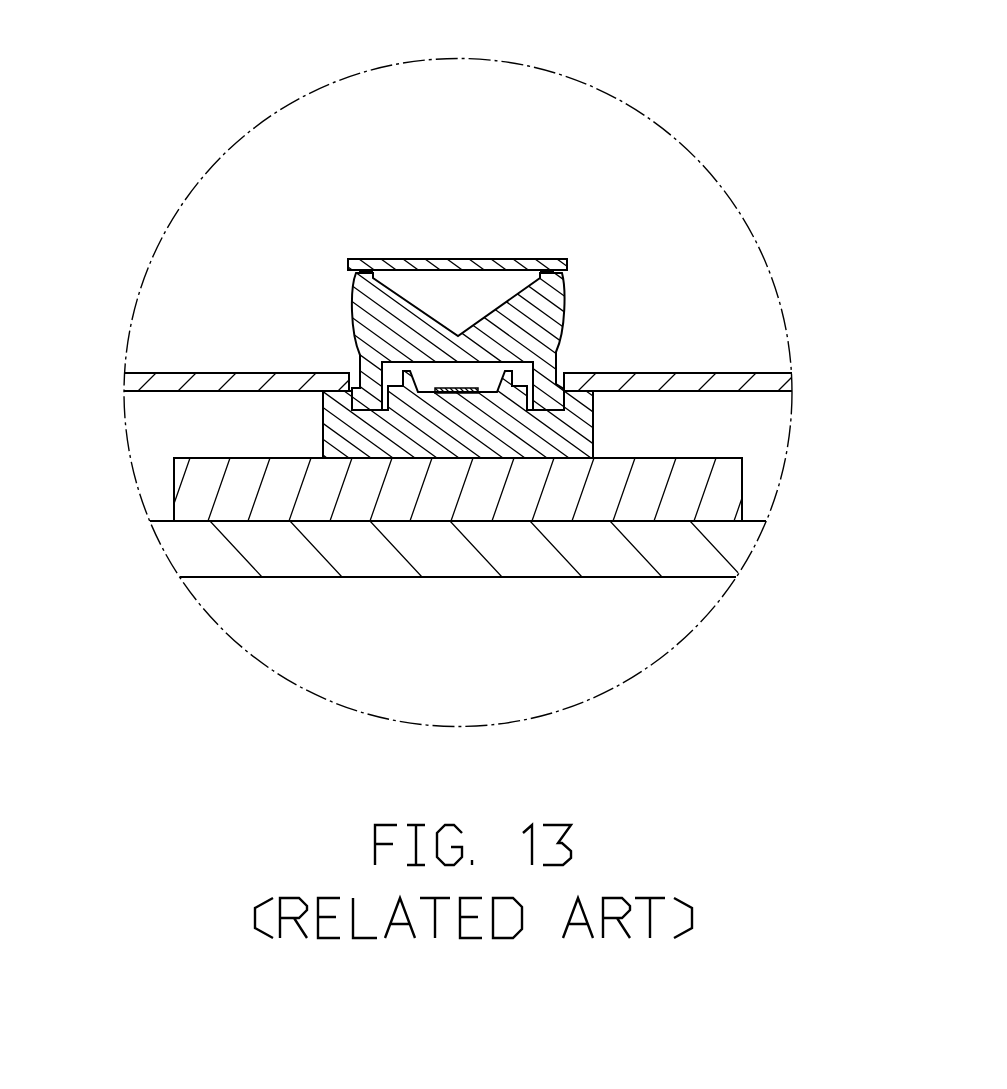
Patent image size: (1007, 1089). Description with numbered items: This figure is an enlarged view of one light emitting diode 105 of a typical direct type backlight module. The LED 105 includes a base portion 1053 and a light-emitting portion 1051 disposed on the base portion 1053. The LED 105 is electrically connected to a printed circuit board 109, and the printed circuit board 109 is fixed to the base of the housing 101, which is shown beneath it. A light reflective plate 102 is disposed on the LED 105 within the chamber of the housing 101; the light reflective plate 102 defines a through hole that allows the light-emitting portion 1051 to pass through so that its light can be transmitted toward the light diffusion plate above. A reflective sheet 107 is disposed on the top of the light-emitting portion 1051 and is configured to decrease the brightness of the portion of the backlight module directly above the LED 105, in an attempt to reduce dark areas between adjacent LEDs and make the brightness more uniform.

The housing 101 is at (722, 657).
The light reflective plate 102 is at (652, 382).
The light emitting diode 105 is at (645, 410).
The reflective sheet 107 is at (425, 263).
The printed circuit board 109 is at (212, 498).
The light-emitting portion 1051 is at (373, 330).
The base portion 1053 is at (345, 432).